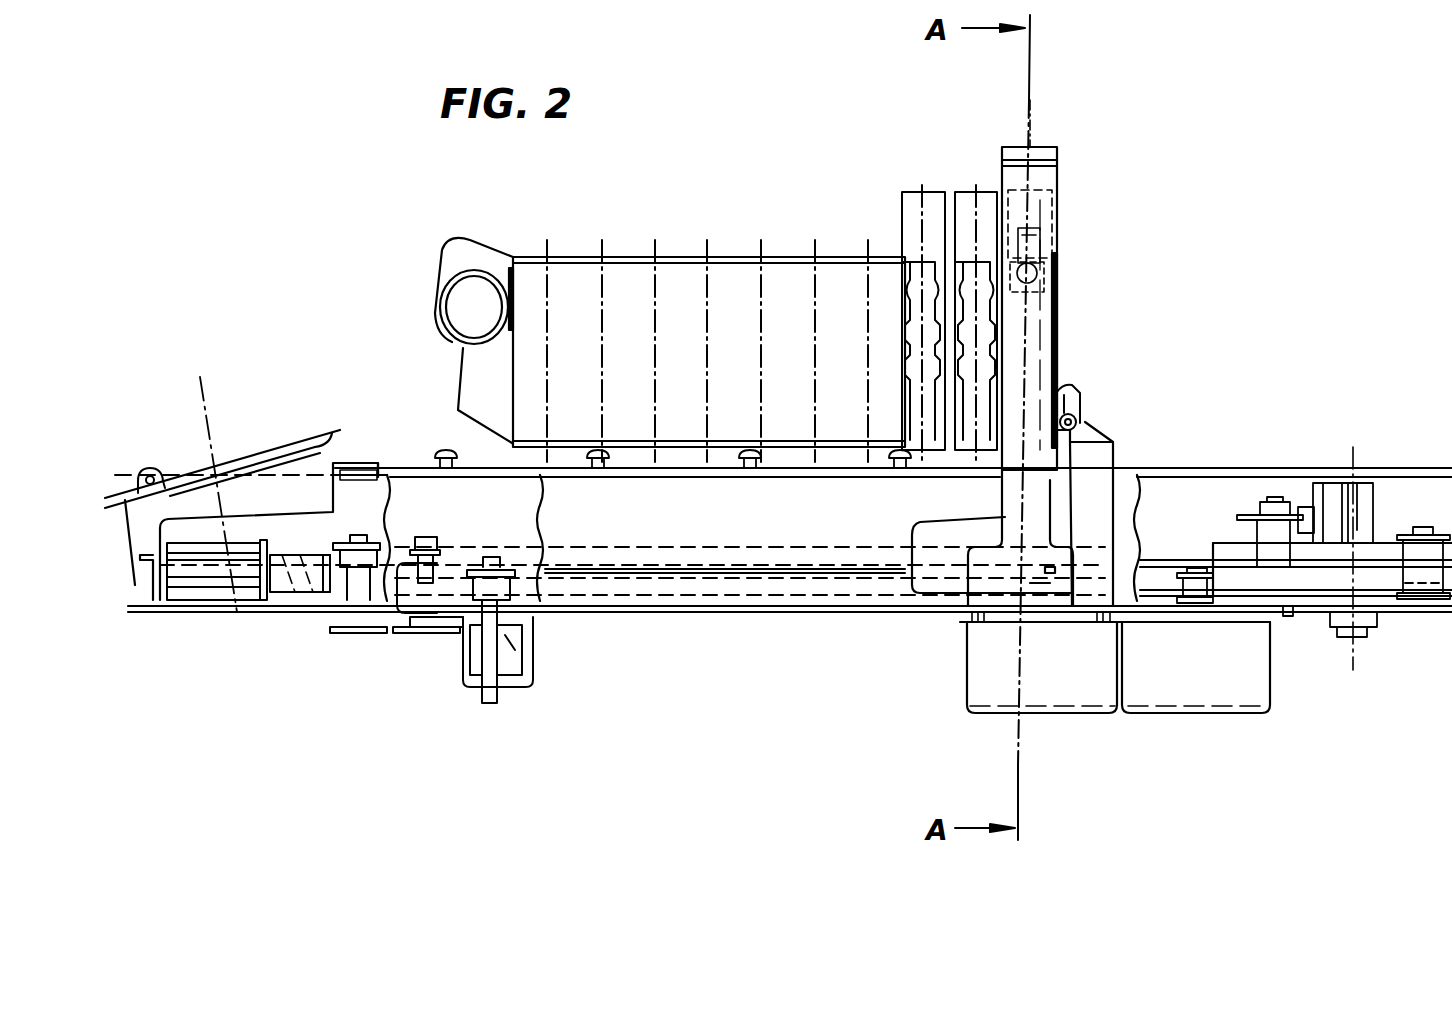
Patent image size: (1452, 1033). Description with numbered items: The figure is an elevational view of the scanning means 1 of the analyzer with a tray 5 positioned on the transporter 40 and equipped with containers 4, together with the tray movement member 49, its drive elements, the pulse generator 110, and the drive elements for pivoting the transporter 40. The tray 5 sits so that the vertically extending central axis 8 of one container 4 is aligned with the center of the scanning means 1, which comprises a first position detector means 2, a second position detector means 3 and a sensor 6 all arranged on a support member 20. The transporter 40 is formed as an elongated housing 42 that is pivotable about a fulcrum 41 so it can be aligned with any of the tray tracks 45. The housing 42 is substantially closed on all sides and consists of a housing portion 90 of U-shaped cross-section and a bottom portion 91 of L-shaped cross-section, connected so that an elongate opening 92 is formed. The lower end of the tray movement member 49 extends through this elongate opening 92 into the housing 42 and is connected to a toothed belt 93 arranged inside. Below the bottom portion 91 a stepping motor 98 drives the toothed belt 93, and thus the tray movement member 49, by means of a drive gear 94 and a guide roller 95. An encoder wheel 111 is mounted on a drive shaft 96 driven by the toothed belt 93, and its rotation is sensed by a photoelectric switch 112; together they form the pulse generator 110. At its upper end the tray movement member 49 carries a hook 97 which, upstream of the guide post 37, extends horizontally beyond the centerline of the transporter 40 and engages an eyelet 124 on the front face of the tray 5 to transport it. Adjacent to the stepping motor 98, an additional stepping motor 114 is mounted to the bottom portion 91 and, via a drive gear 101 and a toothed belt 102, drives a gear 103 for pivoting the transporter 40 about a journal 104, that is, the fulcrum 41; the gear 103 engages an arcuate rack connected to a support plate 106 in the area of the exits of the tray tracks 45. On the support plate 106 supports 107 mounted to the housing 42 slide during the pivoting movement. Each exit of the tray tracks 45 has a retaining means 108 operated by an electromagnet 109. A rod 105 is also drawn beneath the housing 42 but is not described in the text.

The scanning means 1 is at (1068, 170).
The first position detector means 2 is at (1058, 278).
The second position detector means 3 is at (1045, 262).
The container 4 is at (910, 197).
The tray 5 is at (782, 257).
The sensor 6 is at (1040, 225).
The central axis 8 is at (1030, 145).
The support member 20 is at (1040, 323).
The guide post 37 is at (755, 468).
The transporter 40 is at (407, 468).
The fulcrum 41 is at (1368, 665).
The housing 42 is at (1423, 530).
The tray tracks 45 is at (130, 462).
The tray movement member 49 is at (1100, 444).
The housing portion 90 is at (725, 540).
The bottom portion 91 is at (643, 598).
The elongate opening 92 is at (680, 572).
The toothed belt 93 is at (1372, 548).
The drive gear 94 is at (1180, 603).
The guide roller 95 is at (333, 567).
The drive shaft 96 is at (1287, 560).
The hook 97 is at (1083, 425).
The stepping motor 98 is at (1236, 680).
The drive gear 101 is at (1022, 583).
The toothed belt 102 is at (541, 583).
The gear 103 is at (517, 670).
The journal 104 is at (1345, 630).
The rod 105 is at (458, 648).
The support plate 106 is at (370, 634).
The support 107 is at (421, 634).
The retaining means 108 is at (262, 450).
The electromagnet 109 is at (200, 580).
The pulse generator 110 is at (1292, 500).
The encoder wheel 111 is at (1247, 517).
The photoelectric switch 112 is at (1305, 505).
The additional stepping motor 114 is at (975, 678).
The eyelet 124 is at (1073, 392).